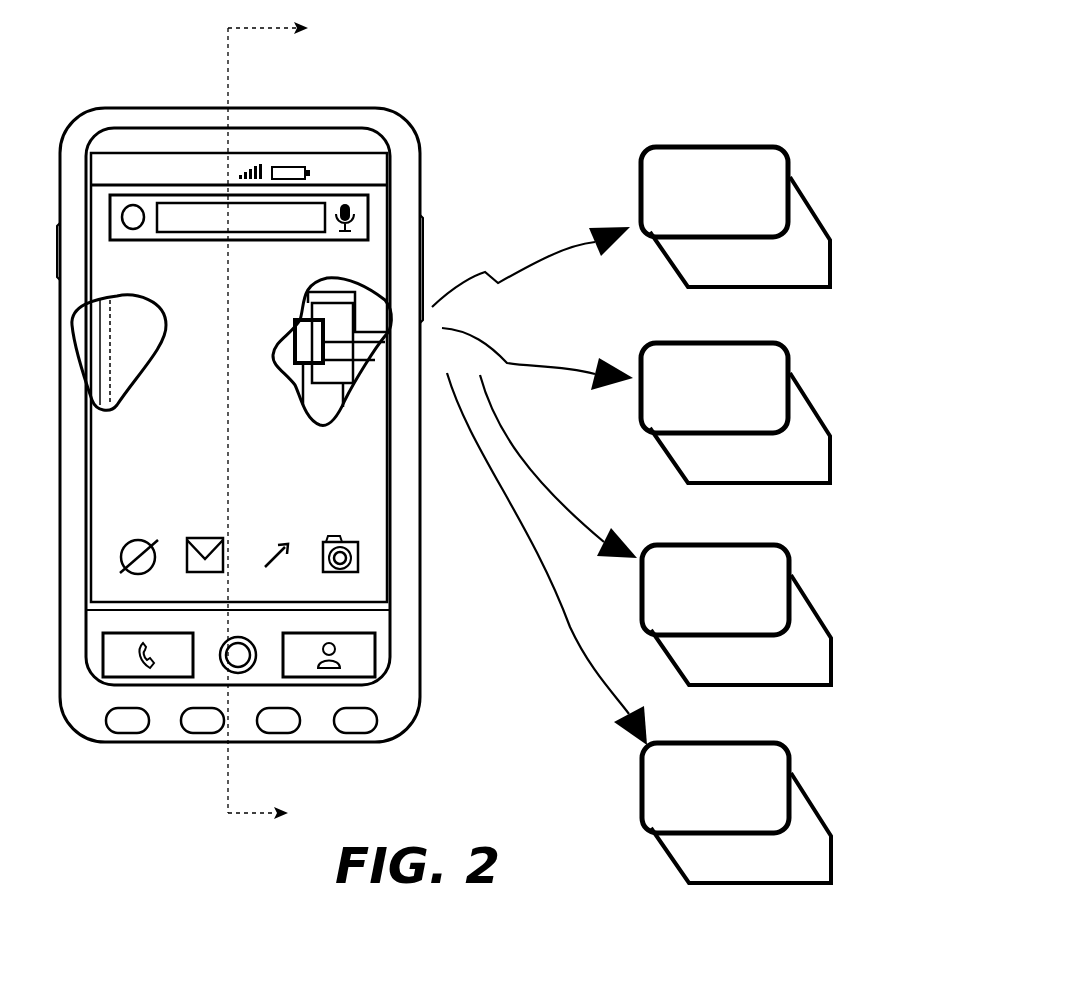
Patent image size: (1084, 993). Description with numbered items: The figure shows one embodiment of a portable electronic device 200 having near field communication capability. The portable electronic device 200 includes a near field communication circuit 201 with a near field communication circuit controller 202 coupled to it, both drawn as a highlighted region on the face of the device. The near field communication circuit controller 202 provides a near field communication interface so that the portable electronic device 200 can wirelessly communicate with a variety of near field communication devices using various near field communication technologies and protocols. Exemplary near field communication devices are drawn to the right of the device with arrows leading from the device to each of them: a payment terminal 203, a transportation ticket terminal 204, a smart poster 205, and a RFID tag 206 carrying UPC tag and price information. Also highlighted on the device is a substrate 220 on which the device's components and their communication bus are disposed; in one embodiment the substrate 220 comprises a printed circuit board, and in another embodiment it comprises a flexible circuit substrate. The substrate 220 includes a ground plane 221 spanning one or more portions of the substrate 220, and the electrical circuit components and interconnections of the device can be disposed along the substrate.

The portable electronic device 200 is at (447, 214).
The near field communication circuit 201 is at (284, 386).
The near field communication circuit controller 202 is at (288, 343).
The payment terminal 203 is at (788, 168).
The transportation ticket terminal 204 is at (788, 364).
The smart poster 205 is at (790, 567).
The RFID tag 206 is at (790, 765).
The substrate 220 is at (98, 389).
The ground plane 221 is at (108, 358).